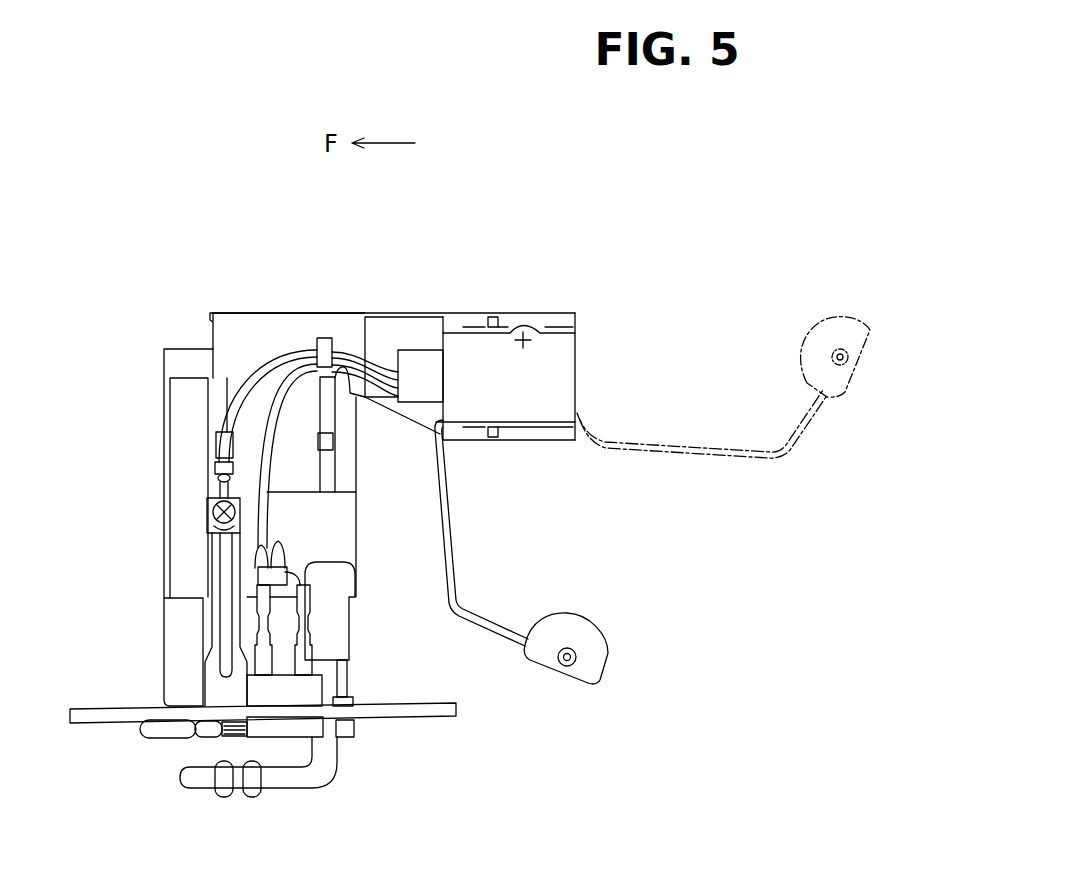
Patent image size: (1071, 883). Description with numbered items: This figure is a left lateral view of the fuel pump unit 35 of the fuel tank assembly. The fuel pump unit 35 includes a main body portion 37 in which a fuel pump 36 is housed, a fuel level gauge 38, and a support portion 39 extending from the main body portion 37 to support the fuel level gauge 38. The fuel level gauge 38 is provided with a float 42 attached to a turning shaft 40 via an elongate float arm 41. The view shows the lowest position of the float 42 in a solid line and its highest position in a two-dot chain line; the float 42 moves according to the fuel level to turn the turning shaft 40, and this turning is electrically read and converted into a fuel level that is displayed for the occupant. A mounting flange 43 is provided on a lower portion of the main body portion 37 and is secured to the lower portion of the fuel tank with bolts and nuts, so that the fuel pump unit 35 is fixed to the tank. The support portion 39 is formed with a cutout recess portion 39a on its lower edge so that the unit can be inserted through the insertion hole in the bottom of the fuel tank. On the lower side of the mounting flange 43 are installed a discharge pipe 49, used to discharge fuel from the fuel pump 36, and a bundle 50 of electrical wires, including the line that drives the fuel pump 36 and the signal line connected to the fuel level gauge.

The fuel pump unit 35 is at (170, 256).
The fuel pump 36 is at (297, 545).
The main body portion 37 is at (296, 277).
The fuel level gauge 38 is at (529, 277).
The support portion 39 is at (399, 277).
The cutout recess portion 39a is at (386, 434).
The turning shaft 40 is at (528, 343).
The float arm 41 is at (452, 548).
The float 42 is at (585, 617).
The mounting flange 43 is at (424, 723).
The discharge pipe 49 is at (300, 780).
The bundle of electrical wires 50 is at (160, 735).